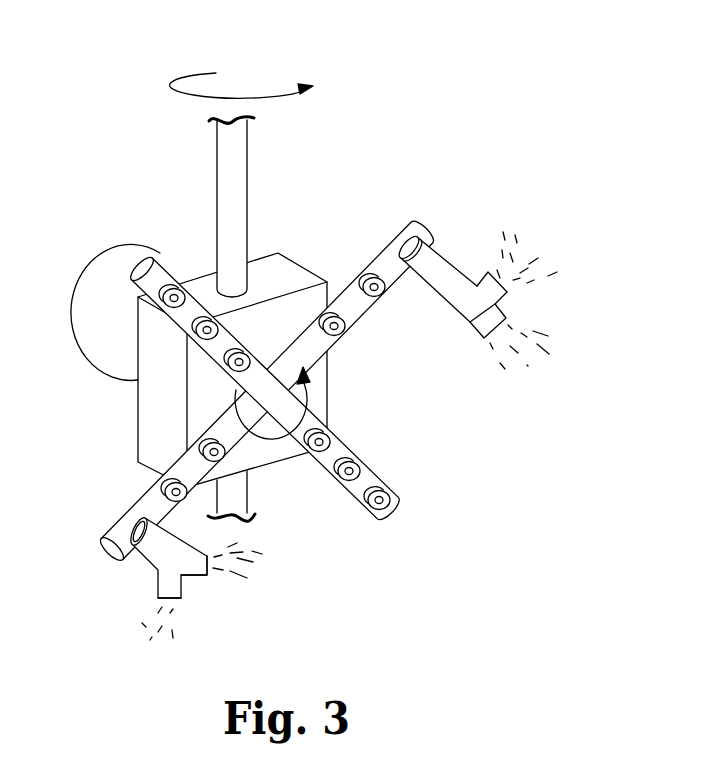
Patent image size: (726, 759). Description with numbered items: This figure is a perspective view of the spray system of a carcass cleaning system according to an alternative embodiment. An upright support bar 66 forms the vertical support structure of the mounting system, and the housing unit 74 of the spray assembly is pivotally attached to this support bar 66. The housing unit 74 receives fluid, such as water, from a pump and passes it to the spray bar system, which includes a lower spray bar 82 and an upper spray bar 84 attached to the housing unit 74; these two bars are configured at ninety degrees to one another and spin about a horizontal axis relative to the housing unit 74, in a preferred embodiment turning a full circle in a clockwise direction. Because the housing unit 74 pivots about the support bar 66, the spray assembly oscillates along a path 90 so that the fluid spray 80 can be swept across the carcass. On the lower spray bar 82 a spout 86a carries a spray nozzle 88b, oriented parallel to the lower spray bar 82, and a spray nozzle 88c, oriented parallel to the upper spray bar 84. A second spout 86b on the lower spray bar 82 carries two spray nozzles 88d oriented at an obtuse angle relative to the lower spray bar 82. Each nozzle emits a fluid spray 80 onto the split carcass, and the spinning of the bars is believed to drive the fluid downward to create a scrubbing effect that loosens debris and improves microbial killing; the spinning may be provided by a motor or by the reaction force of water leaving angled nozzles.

The support bar 66 is at (247, 162).
The housing unit 74 is at (137, 433).
The fluid spray 80 is at (565, 282).
The lower spray bar 82 is at (358, 318).
The upper spray bar 84 is at (367, 478).
The spout 86a is at (445, 258).
The spout 86b is at (146, 558).
The spray nozzle 88b is at (503, 295).
The spray nozzle 88c is at (486, 343).
The spray nozzles 88d is at (190, 577).
The path 90 is at (177, 76).